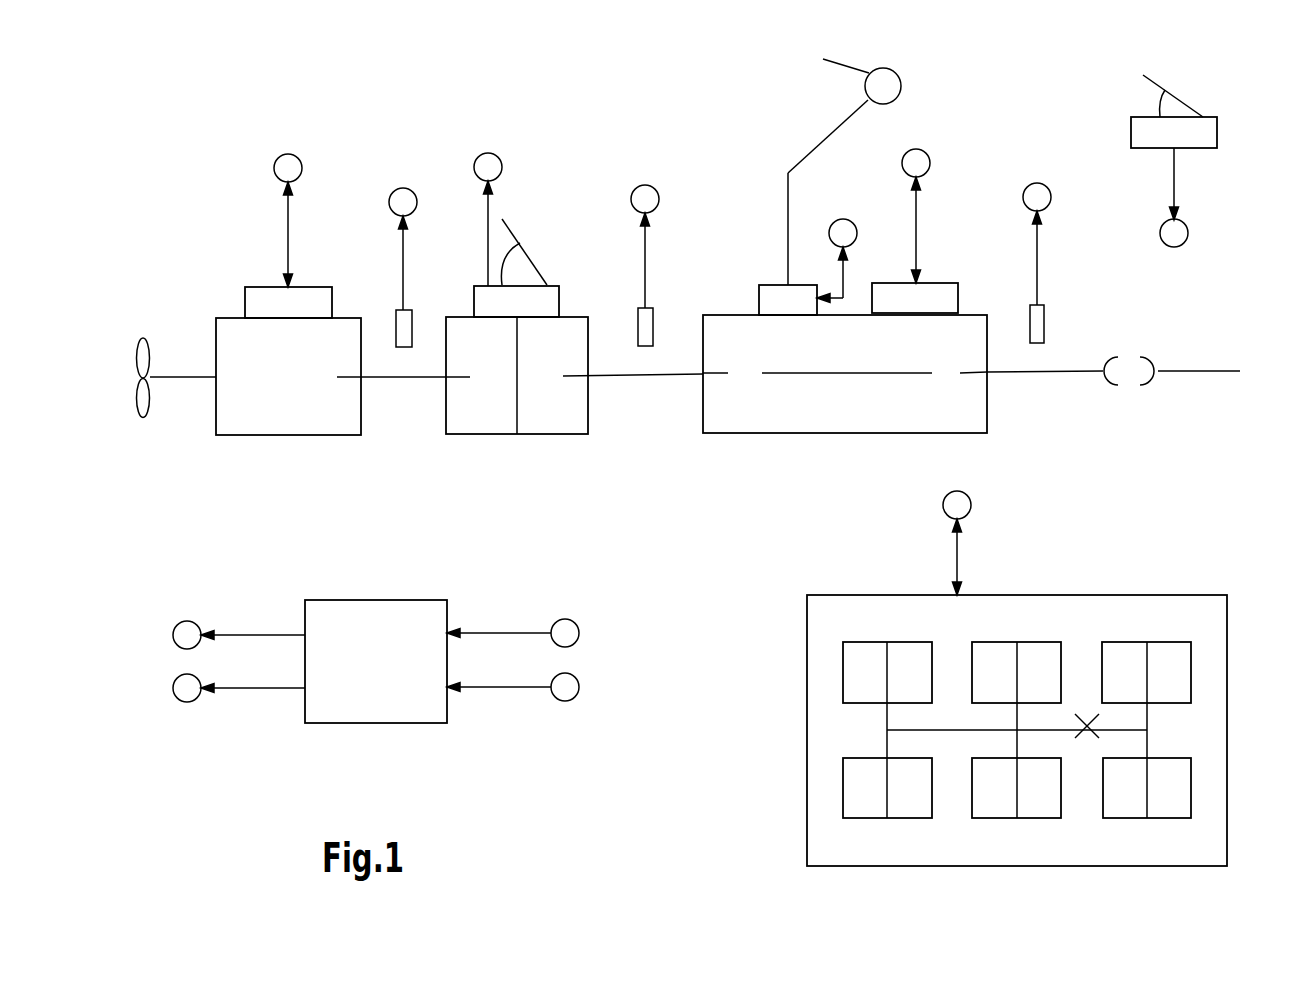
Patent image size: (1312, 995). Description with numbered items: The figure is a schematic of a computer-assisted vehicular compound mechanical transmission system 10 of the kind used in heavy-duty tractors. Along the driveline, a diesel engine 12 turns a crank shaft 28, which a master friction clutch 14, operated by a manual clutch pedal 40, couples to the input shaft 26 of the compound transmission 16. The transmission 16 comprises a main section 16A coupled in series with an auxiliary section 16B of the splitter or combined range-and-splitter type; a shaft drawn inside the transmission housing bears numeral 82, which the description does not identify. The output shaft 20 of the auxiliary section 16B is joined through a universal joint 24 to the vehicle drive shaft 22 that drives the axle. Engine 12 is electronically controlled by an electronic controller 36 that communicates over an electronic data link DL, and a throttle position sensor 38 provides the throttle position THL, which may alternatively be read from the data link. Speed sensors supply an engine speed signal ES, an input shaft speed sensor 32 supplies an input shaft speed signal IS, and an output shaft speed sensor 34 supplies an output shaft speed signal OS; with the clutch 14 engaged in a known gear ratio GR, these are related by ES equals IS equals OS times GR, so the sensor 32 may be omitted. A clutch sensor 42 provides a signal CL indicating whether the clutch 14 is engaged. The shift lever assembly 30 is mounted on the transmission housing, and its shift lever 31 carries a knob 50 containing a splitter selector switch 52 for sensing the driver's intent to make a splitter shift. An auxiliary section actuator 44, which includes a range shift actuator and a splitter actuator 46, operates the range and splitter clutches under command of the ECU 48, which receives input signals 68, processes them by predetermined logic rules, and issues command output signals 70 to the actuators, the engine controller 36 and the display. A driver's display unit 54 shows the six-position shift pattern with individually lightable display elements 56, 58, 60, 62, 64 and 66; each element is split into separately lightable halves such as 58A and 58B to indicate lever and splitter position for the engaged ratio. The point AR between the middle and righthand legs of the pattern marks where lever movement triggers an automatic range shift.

The vehicular compound mechanical transmission system 10 is at (675, 140).
The diesel engine 12 is at (286, 398).
The master friction clutch 14 is at (498, 460).
The multiple-speed compound transmission 16 is at (860, 393).
The main section 16A is at (775, 417).
The auxiliary section 16B is at (967, 400).
The output shaft 20 is at (1073, 368).
The vehicle drive shaft 22 is at (1207, 372).
The universal joint 24 is at (1133, 350).
The input shaft 26 is at (637, 377).
The crank shaft 28 is at (403, 378).
The shift lever assembly 30 is at (818, 190).
The shift lever 31 is at (405, 327).
The input shaft speed sensor 32 is at (647, 327).
The output shaft speed sensor 34 is at (1033, 325).
The electronic controller 36 is at (248, 300).
The throttle position sensor 38 is at (1152, 138).
The manual clutch pedal 40 is at (502, 219).
The clutch sensor 42 is at (555, 300).
The auxiliary section actuator 44 is at (887, 300).
The splitter actuator 46 is at (928, 302).
The ECU 48 is at (360, 700).
The knob 50 is at (888, 93).
The splitter selector switch 52 is at (845, 66).
The driver's display unit 54 is at (1148, 560).
The display element 56 is at (867, 642).
The display element 58 is at (897, 818).
The display element half 58A is at (867, 818).
The display element half 58B is at (913, 810).
The display element 60 is at (1037, 642).
The display element 62 is at (1030, 818).
The display element 64 is at (1167, 642).
The display element 66 is at (1147, 818).
The input signals 68 is at (508, 710).
The command output signals 70 is at (248, 707).
The mainshaft 82 is at (880, 375).
The electronic data link DL is at (287, 230).
The engine rotational speed signal ES is at (403, 263).
The clutch condition signal CL is at (485, 230).
The input shaft rotational speed signal IS is at (648, 253).
The gear ratio GR is at (847, 278).
The output shaft rotational speed signal OS is at (1038, 262).
The throttle position THL is at (1174, 173).
The automatic range shift point AR is at (1087, 742).